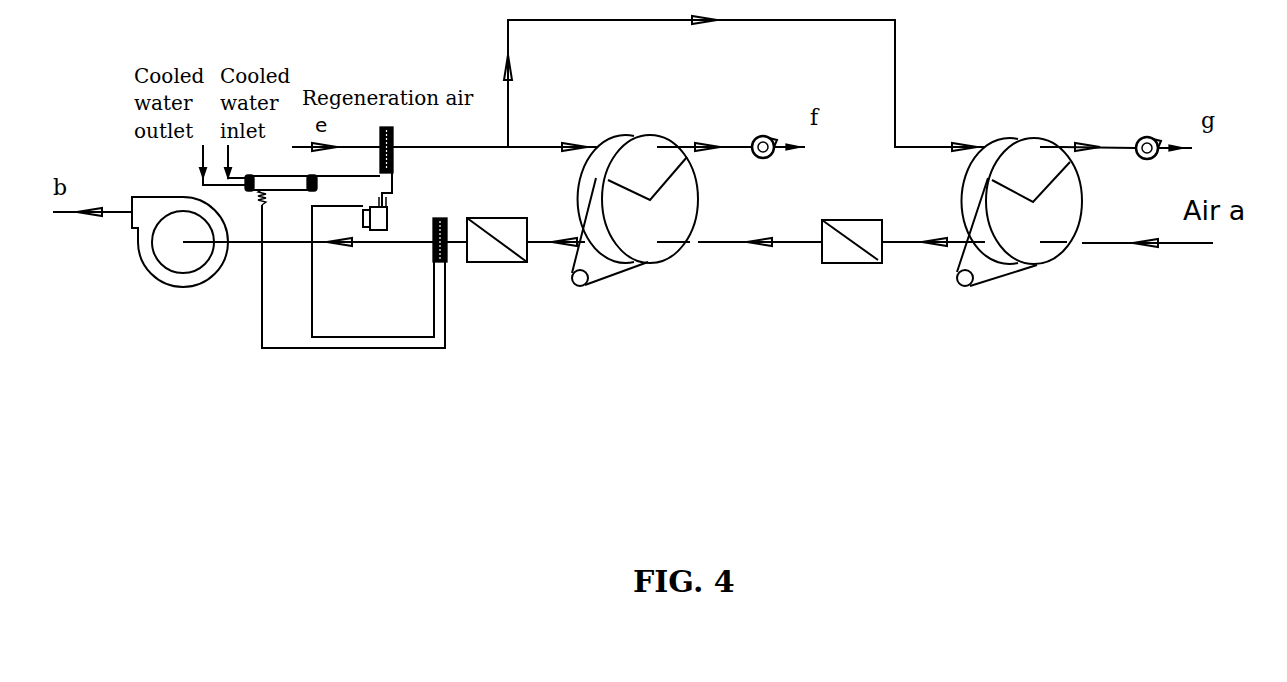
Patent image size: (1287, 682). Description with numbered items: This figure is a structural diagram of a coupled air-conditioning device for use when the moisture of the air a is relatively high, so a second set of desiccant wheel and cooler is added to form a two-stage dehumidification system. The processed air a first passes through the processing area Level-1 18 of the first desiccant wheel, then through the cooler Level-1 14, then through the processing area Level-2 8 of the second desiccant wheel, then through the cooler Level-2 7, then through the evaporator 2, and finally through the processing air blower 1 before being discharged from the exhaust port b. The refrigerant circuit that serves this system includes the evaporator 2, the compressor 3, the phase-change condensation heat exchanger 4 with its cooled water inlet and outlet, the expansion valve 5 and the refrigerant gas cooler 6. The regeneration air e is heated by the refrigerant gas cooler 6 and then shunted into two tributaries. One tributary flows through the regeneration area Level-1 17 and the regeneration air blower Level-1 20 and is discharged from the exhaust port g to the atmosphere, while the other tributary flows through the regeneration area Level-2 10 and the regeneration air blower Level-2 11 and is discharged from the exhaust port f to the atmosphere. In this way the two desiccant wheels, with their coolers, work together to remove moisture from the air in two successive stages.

The processing air blower 1 is at (163, 275).
The evaporator 2 is at (443, 220).
The compressor 3 is at (381, 216).
The phase-change condensation heat exchanger 4 is at (273, 183).
The expansion valve 5 is at (262, 205).
The refrigerant gas cooler 6 is at (392, 130).
The cooler Level-2 7 is at (483, 250).
The processing area Level-2 8 is at (640, 233).
The regeneration area Level-2 10 is at (643, 157).
The regeneration air blower Level-2 11 is at (770, 137).
The cooler Level-1 14 is at (850, 243).
The regeneration area Level-1 17 is at (1025, 160).
The processing area Level-1 18 is at (1030, 237).
The regeneration air blower Level-1 20 is at (1152, 140).